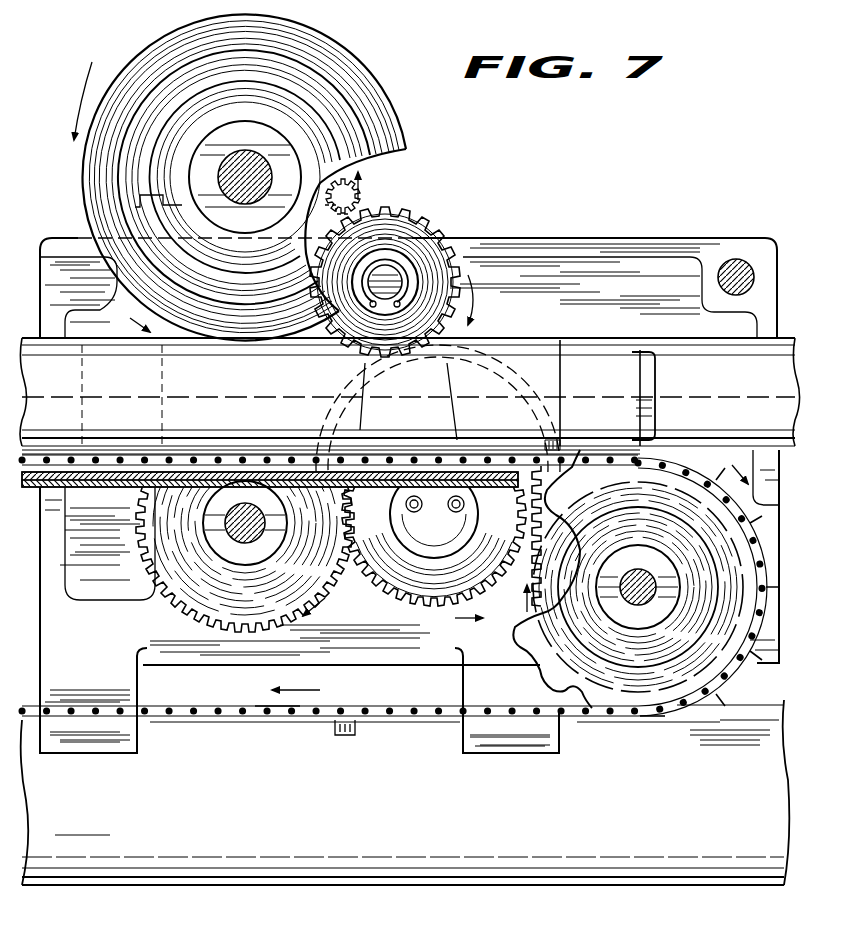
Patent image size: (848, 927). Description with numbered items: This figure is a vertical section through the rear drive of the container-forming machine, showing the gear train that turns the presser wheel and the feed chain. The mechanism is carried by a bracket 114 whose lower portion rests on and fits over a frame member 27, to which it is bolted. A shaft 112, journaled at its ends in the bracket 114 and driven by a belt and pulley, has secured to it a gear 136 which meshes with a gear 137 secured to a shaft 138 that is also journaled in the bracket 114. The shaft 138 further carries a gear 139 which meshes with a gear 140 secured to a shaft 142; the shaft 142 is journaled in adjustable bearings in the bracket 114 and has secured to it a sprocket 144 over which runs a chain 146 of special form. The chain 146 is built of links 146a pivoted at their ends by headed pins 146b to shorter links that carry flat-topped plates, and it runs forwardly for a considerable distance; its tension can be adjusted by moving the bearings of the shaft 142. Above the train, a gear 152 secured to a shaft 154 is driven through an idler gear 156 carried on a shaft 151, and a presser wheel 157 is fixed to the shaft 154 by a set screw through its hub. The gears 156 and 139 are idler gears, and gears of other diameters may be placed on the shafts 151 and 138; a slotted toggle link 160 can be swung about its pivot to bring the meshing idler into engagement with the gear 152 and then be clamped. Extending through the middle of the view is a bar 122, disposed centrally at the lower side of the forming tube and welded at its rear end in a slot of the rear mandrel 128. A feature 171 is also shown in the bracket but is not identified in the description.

The presser wheel 157 is at (143, 60).
The gear 152 is at (327, 173).
The shaft 154 is at (247, 203).
The idler gear 156 is at (440, 230).
The shaft 151 is at (400, 282).
The link 160 is at (440, 345).
The bracket 114 is at (548, 240).
The rear mandrel 128 is at (591, 340).
The pin hole 171 is at (750, 338).
The bar 122 is at (643, 417).
The shaft 112 is at (226, 523).
The gear 136 is at (173, 555).
The shaft 138 is at (426, 516).
The gear 137 is at (408, 549).
The idler gear 139 is at (503, 587).
The gear 140 is at (555, 587).
The shaft 142 is at (643, 577).
The sprocket 144 is at (614, 695).
The chain 146 is at (652, 714).
The link 146a is at (447, 727).
The headed pin 146b is at (290, 720).
The member 27 is at (705, 870).